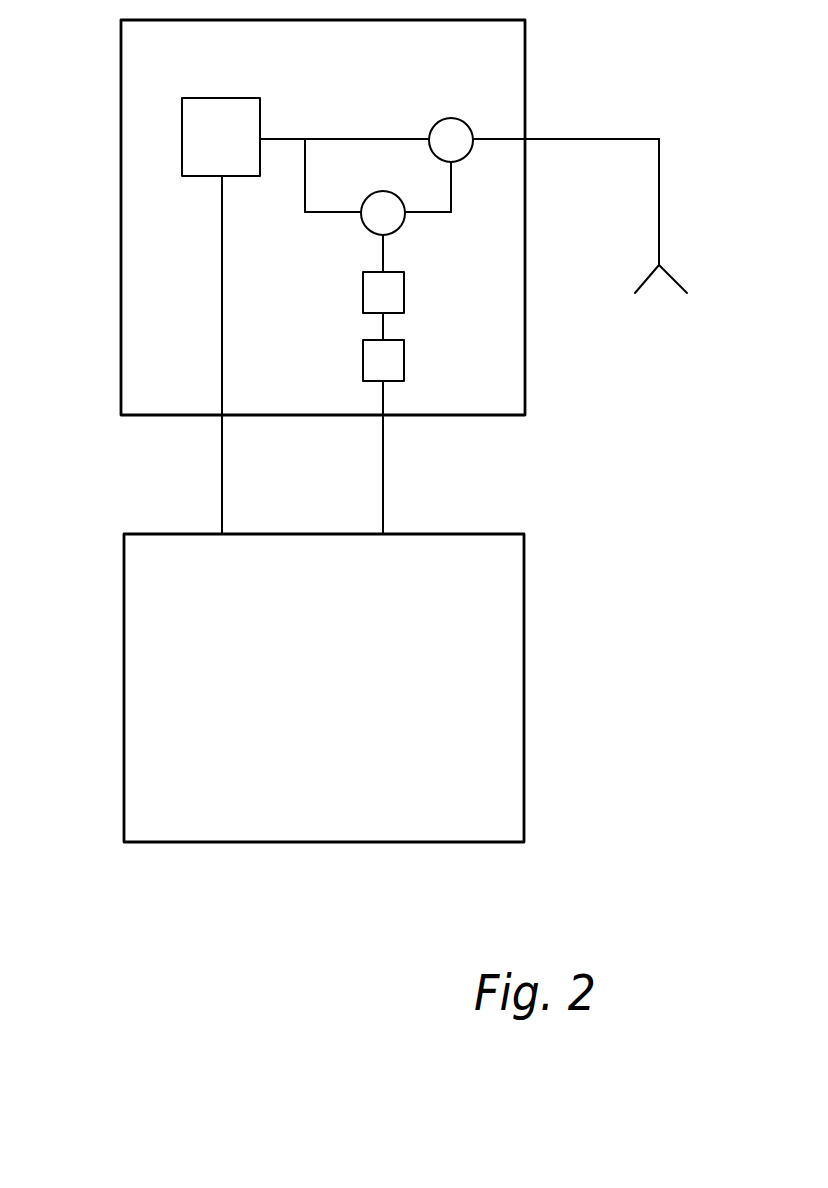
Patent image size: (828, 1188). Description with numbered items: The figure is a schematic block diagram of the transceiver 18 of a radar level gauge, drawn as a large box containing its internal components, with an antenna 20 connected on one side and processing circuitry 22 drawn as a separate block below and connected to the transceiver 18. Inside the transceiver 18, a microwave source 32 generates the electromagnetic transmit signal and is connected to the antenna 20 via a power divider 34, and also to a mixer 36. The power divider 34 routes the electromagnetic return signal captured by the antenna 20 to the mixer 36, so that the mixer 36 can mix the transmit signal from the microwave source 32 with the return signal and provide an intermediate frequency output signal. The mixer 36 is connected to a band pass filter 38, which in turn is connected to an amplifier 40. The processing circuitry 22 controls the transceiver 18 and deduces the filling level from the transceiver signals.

The transceiver 18 is at (121, 268).
The antenna 20 is at (665, 270).
The processing circuitry 22 is at (124, 738).
The microwave source 32 is at (216, 110).
The power divider 34 is at (449, 145).
The mixer 36 is at (390, 216).
The band pass filter 38 is at (392, 294).
The amplifier 40 is at (388, 364).